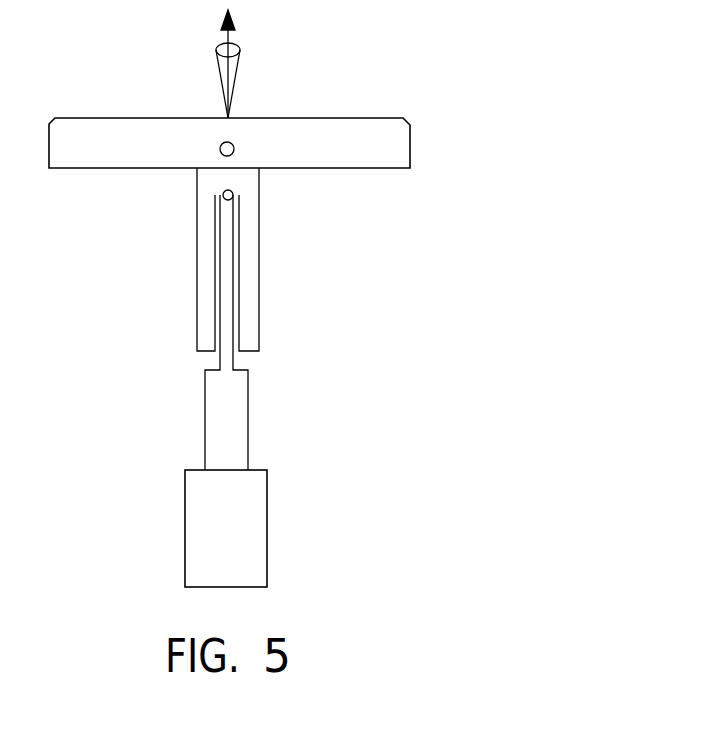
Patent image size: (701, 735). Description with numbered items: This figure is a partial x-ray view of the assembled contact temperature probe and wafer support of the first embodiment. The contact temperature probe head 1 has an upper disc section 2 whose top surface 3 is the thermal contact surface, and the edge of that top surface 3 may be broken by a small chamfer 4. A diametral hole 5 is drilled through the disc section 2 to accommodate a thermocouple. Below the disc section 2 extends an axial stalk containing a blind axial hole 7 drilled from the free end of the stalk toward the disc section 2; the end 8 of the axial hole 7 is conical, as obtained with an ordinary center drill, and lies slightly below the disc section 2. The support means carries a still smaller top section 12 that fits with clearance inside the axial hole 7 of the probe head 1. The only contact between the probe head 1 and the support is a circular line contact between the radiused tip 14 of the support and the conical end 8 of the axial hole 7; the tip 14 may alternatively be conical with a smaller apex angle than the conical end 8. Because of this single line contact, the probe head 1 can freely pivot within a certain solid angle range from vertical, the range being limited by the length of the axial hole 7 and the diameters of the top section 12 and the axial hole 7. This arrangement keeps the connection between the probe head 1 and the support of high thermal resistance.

The contact temperature probe head 1 is at (427, 145).
The upper disc section 2 is at (300, 429).
The top surface 3 is at (398, 118).
The chamfer 4 is at (242, 58).
The diametral hole 5 is at (232, 144).
The blind axial hole 7 is at (233, 192).
The conical end of the blind hole 8 is at (250, 352).
The top section 12 is at (205, 370).
The tip 14 is at (224, 190).